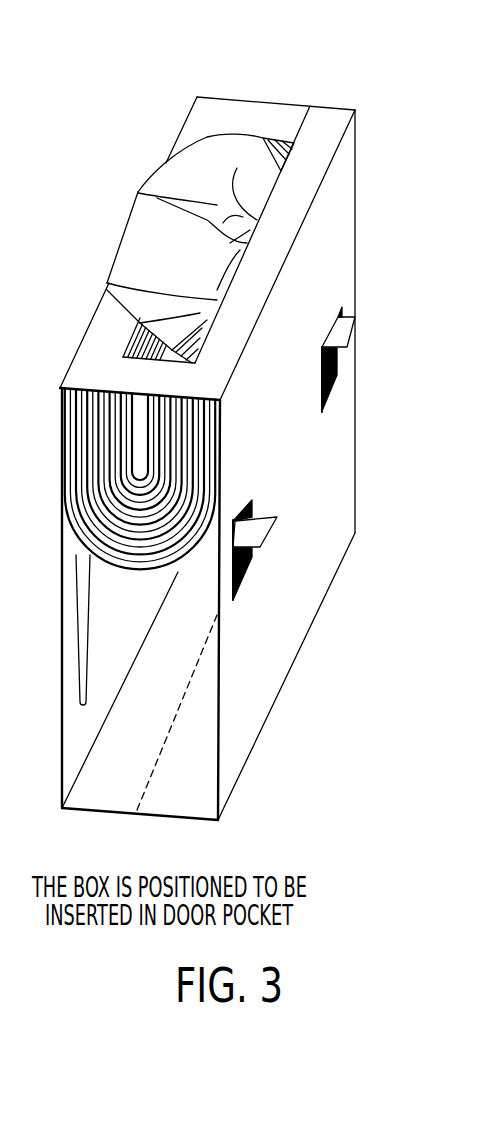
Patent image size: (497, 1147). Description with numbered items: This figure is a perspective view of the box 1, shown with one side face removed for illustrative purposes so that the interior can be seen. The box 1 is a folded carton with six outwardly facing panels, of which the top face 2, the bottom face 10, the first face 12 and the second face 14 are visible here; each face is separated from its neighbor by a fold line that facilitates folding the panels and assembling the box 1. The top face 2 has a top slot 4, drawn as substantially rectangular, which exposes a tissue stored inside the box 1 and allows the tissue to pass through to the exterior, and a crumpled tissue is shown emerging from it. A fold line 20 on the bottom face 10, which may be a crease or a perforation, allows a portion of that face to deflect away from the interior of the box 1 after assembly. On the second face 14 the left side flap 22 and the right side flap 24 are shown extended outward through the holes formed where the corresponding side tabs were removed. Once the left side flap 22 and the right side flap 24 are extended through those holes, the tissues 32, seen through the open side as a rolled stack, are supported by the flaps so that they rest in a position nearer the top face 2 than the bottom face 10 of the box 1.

The box 1 is at (383, 133).
The top face 2 is at (212, 110).
The top slot 4 is at (307, 108).
The bottom face 10 is at (187, 797).
The first face 12 is at (72, 742).
The second face 14 is at (273, 610).
The fold line 20 is at (143, 782).
The left side flap 22 is at (257, 530).
The right side flap 24 is at (343, 328).
The tissues 32 is at (62, 520).